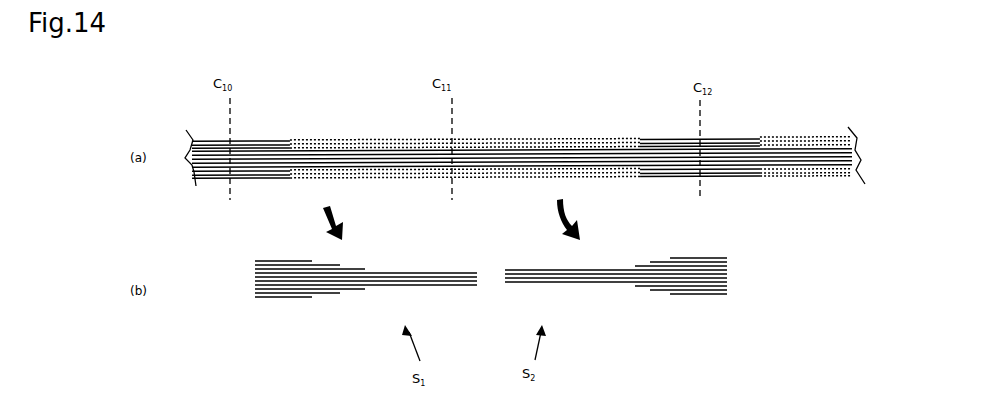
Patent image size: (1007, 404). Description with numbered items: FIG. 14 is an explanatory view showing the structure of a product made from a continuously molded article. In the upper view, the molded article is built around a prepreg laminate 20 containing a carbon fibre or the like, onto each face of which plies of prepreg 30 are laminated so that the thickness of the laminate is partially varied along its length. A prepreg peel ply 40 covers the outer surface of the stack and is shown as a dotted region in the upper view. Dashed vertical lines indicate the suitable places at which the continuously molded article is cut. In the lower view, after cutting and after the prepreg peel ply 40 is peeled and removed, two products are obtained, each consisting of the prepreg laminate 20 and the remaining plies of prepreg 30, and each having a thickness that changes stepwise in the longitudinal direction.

The prepreg laminate 20 is at (192, 163).
The prepreg plies 30 is at (252, 146).
The prepreg peel ply 40 is at (518, 141).